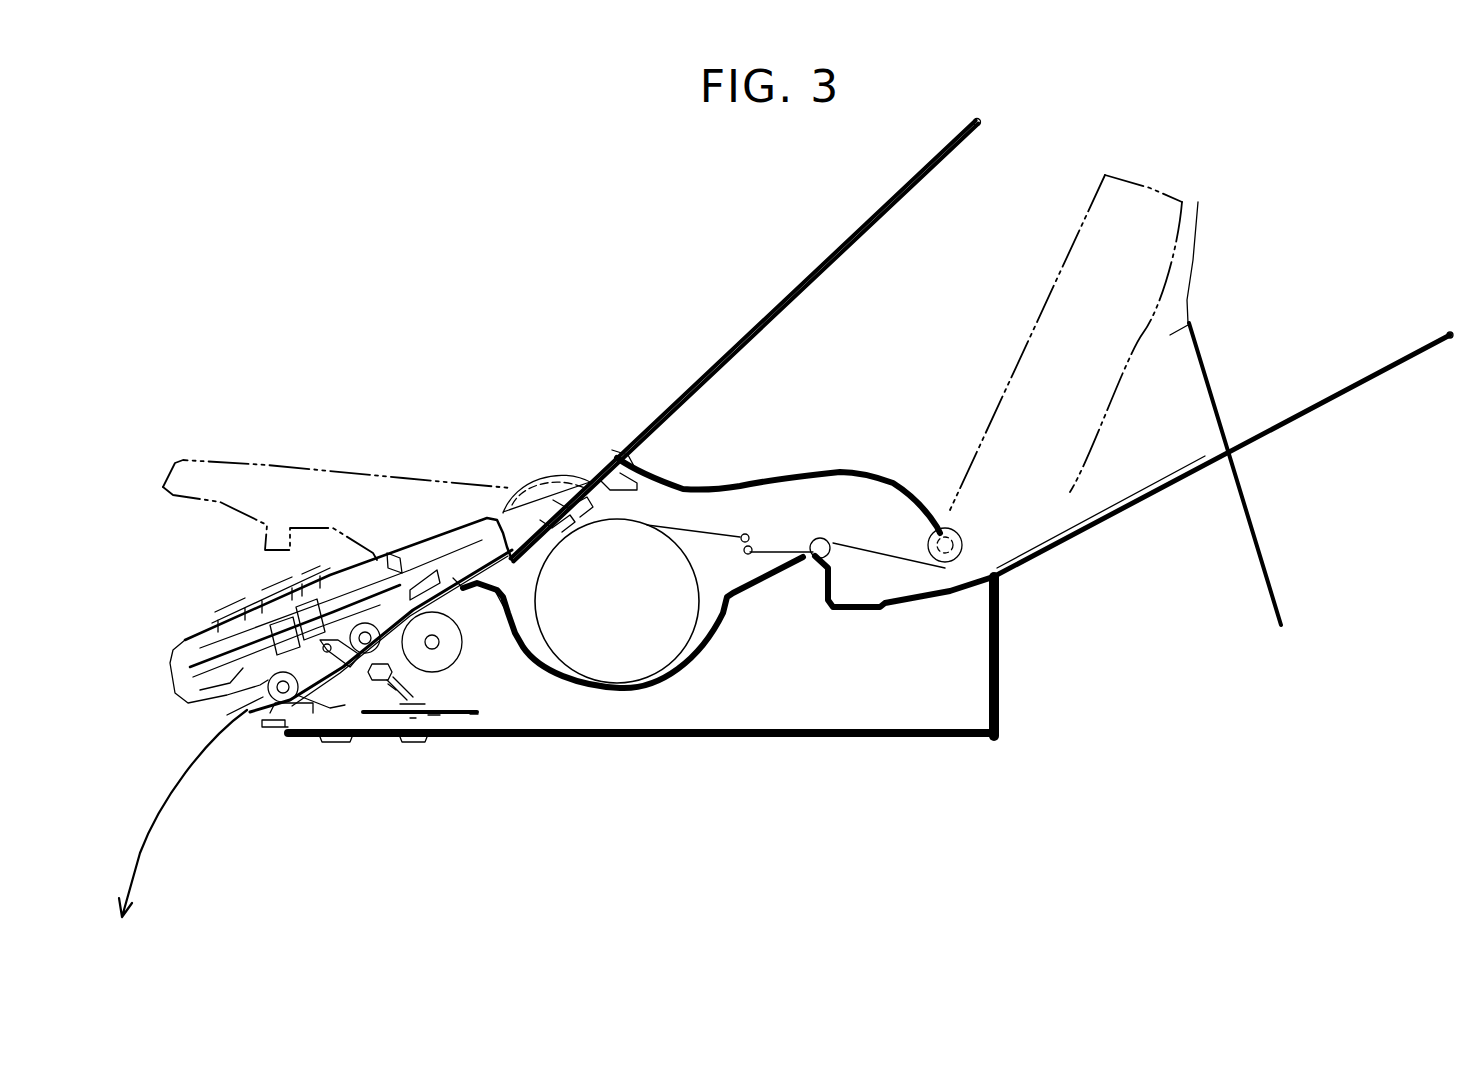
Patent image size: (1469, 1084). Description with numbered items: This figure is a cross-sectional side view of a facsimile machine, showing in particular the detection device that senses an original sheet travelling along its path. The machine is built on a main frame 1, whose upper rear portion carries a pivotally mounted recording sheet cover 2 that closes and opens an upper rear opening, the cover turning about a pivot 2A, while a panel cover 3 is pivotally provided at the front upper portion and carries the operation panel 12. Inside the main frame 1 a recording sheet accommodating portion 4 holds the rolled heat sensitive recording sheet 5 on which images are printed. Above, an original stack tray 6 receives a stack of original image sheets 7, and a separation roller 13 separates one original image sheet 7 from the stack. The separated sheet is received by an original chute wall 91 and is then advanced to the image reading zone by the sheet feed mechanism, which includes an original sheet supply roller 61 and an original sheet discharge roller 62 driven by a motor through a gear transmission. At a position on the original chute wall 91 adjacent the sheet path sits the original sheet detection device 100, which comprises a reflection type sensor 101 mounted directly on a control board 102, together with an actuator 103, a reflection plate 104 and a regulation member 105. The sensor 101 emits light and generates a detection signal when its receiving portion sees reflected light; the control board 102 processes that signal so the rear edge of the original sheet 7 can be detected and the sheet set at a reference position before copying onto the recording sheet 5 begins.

The main frame 1 is at (770, 740).
The recording sheet cover 2 is at (820, 480).
The cover pivot shaft 2A is at (945, 528).
The panel cover 3 is at (295, 465).
The recording sheet accommodating portion 4 is at (548, 655).
The recording sheet 5 is at (637, 540).
The original stack tray 6 is at (812, 290).
The original image sheet 7 is at (697, 378).
The operation panel 12 is at (333, 585).
The separation roller 13 is at (455, 653).
The original sheet supply roller 61 is at (367, 565).
The original sheet discharge roller 62 is at (243, 708).
The original chute wall 91 is at (473, 590).
The original sheet detection device 100 is at (410, 723).
The reflection type sensor 101 is at (432, 717).
The control board 102 is at (477, 717).
The actuator 103 is at (390, 687).
The reflection plate 104 is at (412, 715).
The regulation member 105 is at (413, 720).